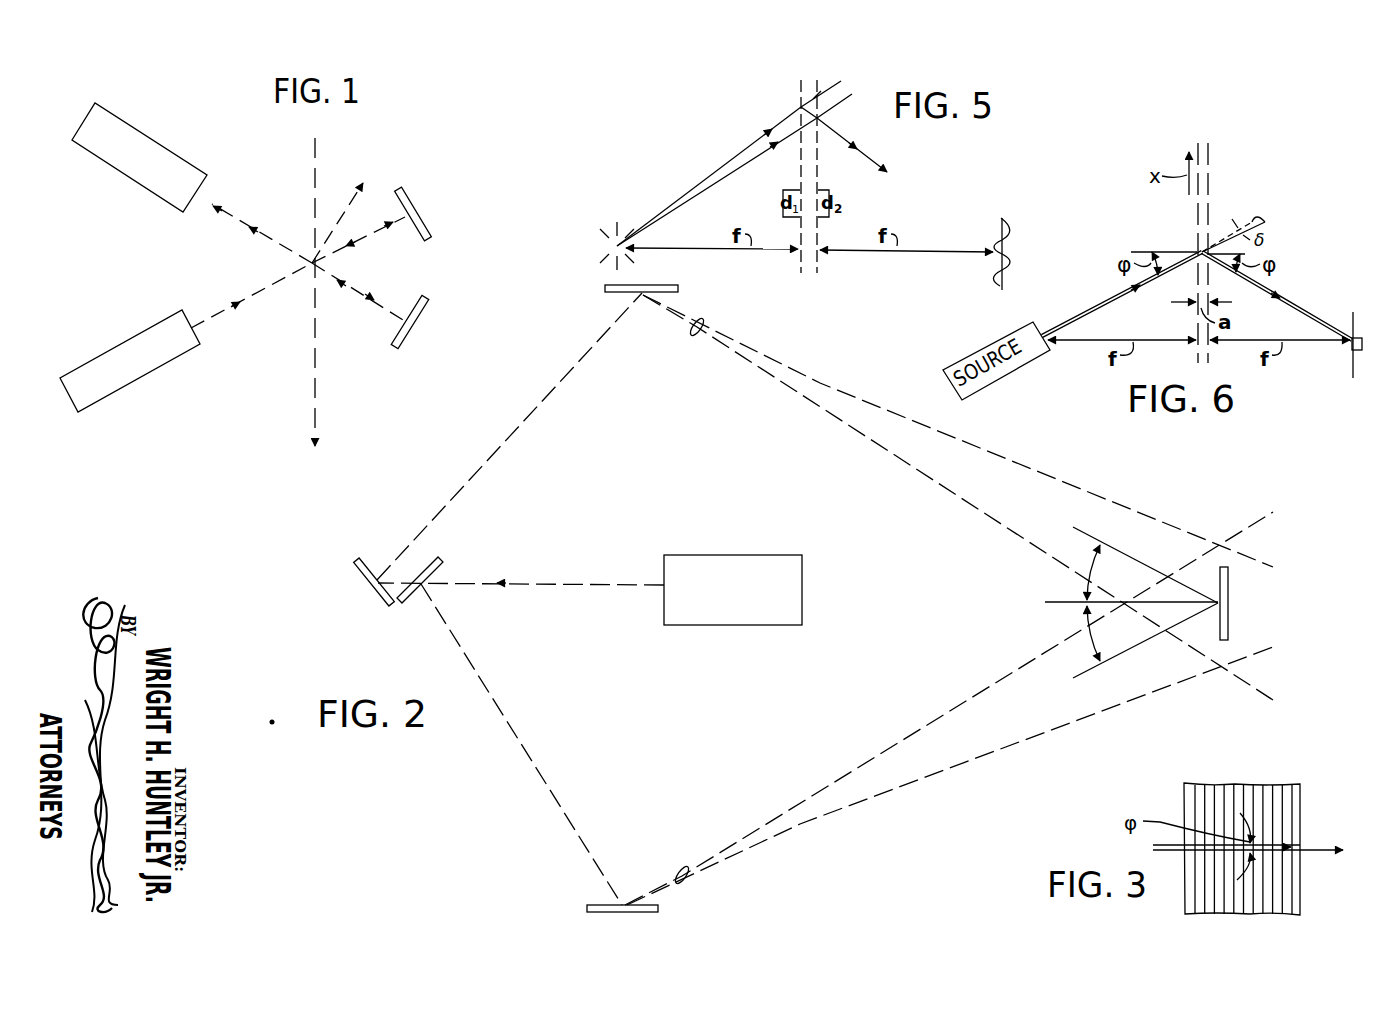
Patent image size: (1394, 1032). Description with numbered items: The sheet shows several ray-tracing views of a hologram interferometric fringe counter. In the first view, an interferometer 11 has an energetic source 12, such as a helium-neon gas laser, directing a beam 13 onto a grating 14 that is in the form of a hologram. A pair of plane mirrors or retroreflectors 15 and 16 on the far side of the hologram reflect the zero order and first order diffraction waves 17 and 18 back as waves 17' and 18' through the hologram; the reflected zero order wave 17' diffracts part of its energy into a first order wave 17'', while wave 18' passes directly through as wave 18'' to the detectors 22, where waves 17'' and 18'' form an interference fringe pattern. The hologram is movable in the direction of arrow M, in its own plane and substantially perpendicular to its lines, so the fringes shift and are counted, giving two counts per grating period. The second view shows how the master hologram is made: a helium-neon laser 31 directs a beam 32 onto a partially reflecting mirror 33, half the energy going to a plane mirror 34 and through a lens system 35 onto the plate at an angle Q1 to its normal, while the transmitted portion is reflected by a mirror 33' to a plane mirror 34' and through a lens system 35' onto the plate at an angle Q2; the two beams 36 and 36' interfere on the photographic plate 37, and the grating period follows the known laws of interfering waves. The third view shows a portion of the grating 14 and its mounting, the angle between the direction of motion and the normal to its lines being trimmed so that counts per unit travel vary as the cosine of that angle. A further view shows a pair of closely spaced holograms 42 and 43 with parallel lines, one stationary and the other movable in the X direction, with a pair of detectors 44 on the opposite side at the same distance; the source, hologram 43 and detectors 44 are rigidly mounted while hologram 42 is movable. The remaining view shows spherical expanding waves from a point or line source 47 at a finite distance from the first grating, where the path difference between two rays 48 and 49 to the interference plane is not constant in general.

In FIG. 1, the interferometer 11 is at (222, 391).
In FIG. 1, the energetic source 12 is at (128, 334).
In FIG. 1, the beam 13 is at (235, 301).
In FIG. 1, the grating 14 is at (312, 383).
In FIG. 1, the direction of motion arrow M is at (316, 418).
In FIG. 1, the plane mirror 15 is at (399, 190).
In FIG. 1, the plane mirror 16 is at (428, 300).
In FIG. 1, the zero order diffraction wave 17 is at (369, 245).
In FIG. 1, the reflected zero order wave 17' is at (366, 256).
In FIG. 1, the first order wave 17'' is at (269, 195).
In FIG. 1, the first order diffraction wave 18 is at (357, 308).
In FIG. 1, the reflected first order wave 18' is at (329, 305).
In FIG. 1, the transmitted wave 18'' is at (254, 233).
In FIG. 1, the detectors 22 is at (173, 151).
In FIG. 2, the helium-neon laser 31 is at (783, 556).
In FIG. 2, the beam 32 is at (577, 583).
In FIG. 2, the partially reflecting mirror 33 is at (446, 557).
In FIG. 2, the mirror 33' is at (366, 559).
In FIG. 2, the plane mirror 34 is at (670, 894).
In FIG. 2, the plane mirror 34' is at (611, 297).
In FIG. 2, the lens system 35 is at (693, 838).
In FIG. 2, the lens system 35' is at (680, 350).
In FIG. 2, the beam 36 is at (1145, 685).
In FIG. 2, the beam 36' is at (1145, 524).
In FIG. 2, the photographic plate 37 is at (1226, 641).
In FIG. 2, the angle θ1 Q1 is at (1085, 628).
In FIG. 2, the angle θ2 Q2 is at (1085, 578).
In FIG. 6, the hologram 42 is at (1197, 217).
In FIG. 6, the hologram 43 is at (1209, 196).
In FIG. 6, the detectors 44 is at (1362, 339).
In FIG. 5, the point or line source 47 is at (611, 245).
In FIG. 5, the ray 48 is at (700, 181).
In FIG. 5, the ray 49 is at (731, 175).